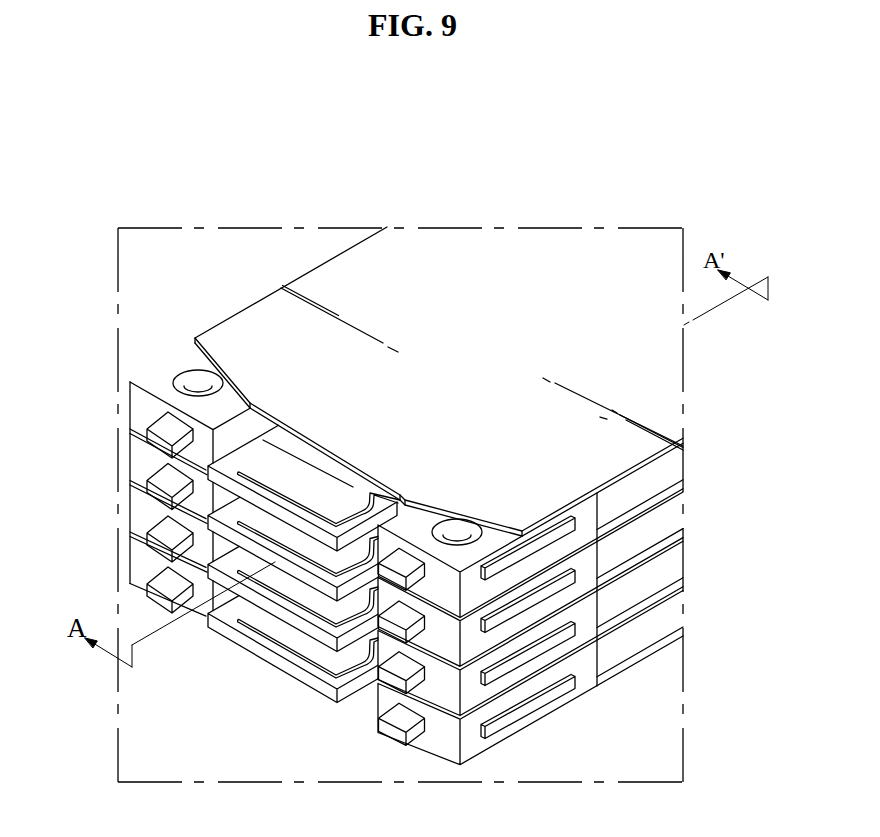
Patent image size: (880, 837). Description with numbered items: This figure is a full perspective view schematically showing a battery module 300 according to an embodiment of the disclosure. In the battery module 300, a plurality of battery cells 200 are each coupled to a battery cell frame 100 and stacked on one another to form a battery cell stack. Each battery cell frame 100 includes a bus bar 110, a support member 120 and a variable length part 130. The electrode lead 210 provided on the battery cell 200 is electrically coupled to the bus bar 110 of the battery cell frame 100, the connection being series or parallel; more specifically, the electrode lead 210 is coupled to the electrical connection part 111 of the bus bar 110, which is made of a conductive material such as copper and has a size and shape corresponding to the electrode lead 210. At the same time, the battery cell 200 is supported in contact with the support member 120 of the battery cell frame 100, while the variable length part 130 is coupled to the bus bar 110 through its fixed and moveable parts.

The battery module 300 is at (200, 165).
The battery cell 200 is at (257, 320).
The electrode lead 210 is at (263, 468).
The bus bar 110 is at (225, 710).
The electrical connection part 111 is at (273, 665).
The support member 120 is at (383, 740).
The variable length part 130 is at (552, 727).
The battery cell frame 100 is at (628, 686).